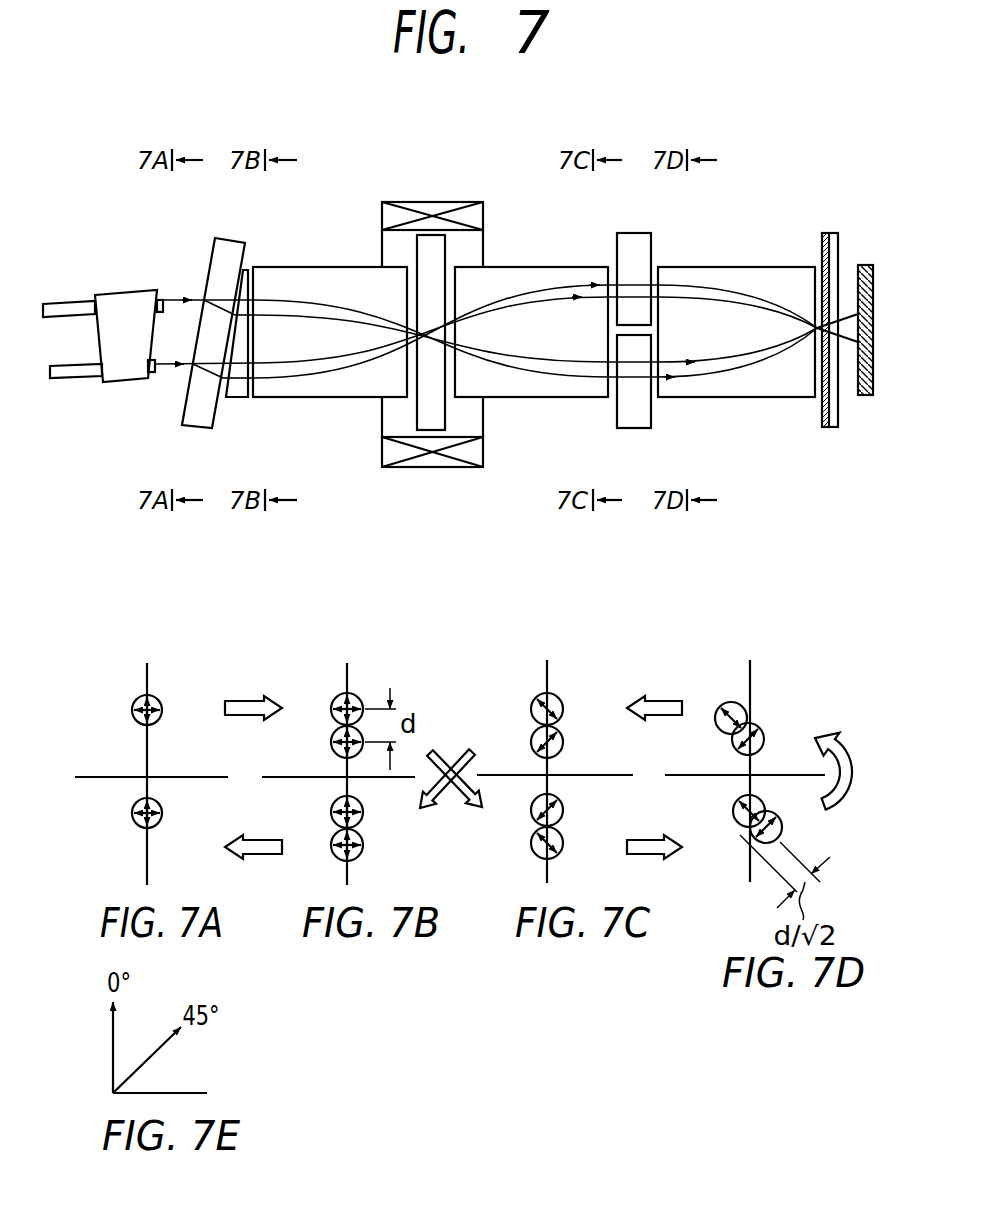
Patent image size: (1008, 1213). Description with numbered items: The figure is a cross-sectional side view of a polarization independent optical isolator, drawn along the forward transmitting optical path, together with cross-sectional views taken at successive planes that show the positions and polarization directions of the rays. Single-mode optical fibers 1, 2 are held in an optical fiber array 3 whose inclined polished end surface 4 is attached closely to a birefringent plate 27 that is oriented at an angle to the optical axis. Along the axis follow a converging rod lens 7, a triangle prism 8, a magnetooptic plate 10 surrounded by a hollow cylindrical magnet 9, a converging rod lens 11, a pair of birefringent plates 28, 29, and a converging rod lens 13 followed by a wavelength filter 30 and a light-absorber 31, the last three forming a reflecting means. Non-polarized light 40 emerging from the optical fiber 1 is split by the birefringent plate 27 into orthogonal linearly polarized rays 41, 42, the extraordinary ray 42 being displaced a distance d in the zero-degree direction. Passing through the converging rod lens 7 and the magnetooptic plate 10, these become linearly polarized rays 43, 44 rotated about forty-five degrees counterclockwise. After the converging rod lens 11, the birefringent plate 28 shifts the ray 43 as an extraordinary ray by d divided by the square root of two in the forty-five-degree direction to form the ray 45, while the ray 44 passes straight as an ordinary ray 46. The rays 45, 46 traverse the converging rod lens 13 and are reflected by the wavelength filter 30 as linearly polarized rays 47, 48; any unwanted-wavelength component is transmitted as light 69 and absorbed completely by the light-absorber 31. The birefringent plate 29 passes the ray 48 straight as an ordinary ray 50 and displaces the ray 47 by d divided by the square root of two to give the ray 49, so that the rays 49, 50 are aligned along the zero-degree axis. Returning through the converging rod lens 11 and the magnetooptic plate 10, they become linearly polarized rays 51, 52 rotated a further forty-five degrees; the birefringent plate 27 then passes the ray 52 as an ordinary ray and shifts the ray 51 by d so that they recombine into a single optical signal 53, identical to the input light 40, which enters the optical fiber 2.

In FIG. 7, the single-mode optical fiber 1 is at (75, 302).
In FIG. 7, the single-mode optical fiber 2 is at (60, 378).
In FIG. 7, the optical fiber array 3 is at (118, 382).
In FIG. 7, the inclined polished end surface 4 is at (126, 337).
In FIG. 7, the converging rod lens 7 is at (360, 278).
In FIG. 7, the triangle prism 8 is at (237, 392).
In FIG. 7, the hollow cylindrical magnet 9 is at (410, 212).
In FIG. 7, the magnetooptic plate 10 is at (440, 260).
In FIG. 7, the converging rod lens 11 is at (503, 283).
In FIG. 7, the converging rod lens 13 is at (797, 273).
In FIG. 7, the birefringent plate 27 is at (230, 252).
In FIG. 7, the birefringent plate 28 is at (638, 410).
In FIG. 7, the birefringent plate 29 is at (637, 250).
In FIG. 7, the wavelength filter 30 is at (830, 230).
In FIG. 7, the light-absorber 31 is at (865, 263).
In FIG. 7, the non-polarized light 40 is at (172, 290).
In FIG. 7A, the non-polarized light 40 is at (158, 700).
In FIG. 7, the linearly polarized ray 41 is at (275, 297).
In FIG. 7B, the linearly polarized ray 41 is at (352, 695).
In FIG. 7, the linearly polarized ray 42 is at (318, 313).
In FIG. 7B, the linearly polarized ray 42 is at (330, 738).
In FIG. 7, the linearly polarized ray 43 is at (535, 375).
In FIG. 7C, the linearly polarized ray 43 is at (563, 840).
In FIG. 7, the linearly polarized ray 44 is at (573, 363).
In FIG. 7C, the linearly polarized ray 44 is at (560, 805).
In FIG. 7, the linearly polarized ray 45 is at (697, 367).
In FIG. 7D, the linearly polarized ray 45 is at (785, 832).
In FIG. 7, the ordinary ray 46 is at (733, 357).
In FIG. 7D, the ordinary ray 46 is at (768, 800).
In FIG. 7, the linearly polarized ray 47 is at (688, 283).
In FIG. 7D, the linearly polarized ray 47 is at (727, 702).
In FIG. 7, the linearly polarized ray 48 is at (725, 297).
In FIG. 7D, the linearly polarized ray 48 is at (763, 725).
In FIG. 7, the linearly polarized ray 49 is at (578, 270).
In FIG. 7C, the linearly polarized ray 49 is at (557, 698).
In FIG. 7, the ordinary ray 50 is at (546, 296).
In FIG. 7C, the ordinary ray 50 is at (560, 735).
In FIG. 7, the linearly polarized ray 51 is at (339, 378).
In FIG. 7B, the linearly polarized ray 51 is at (365, 844).
In FIG. 7, the linearly polarized ray 52 is at (298, 363).
In FIG. 7B, the linearly polarized ray 52 is at (362, 807).
In FIG. 7, the single optical signal 53 is at (151, 373).
In FIG. 7A, the single optical signal 53 is at (163, 812).
In FIG. 7, the light 69 is at (847, 323).